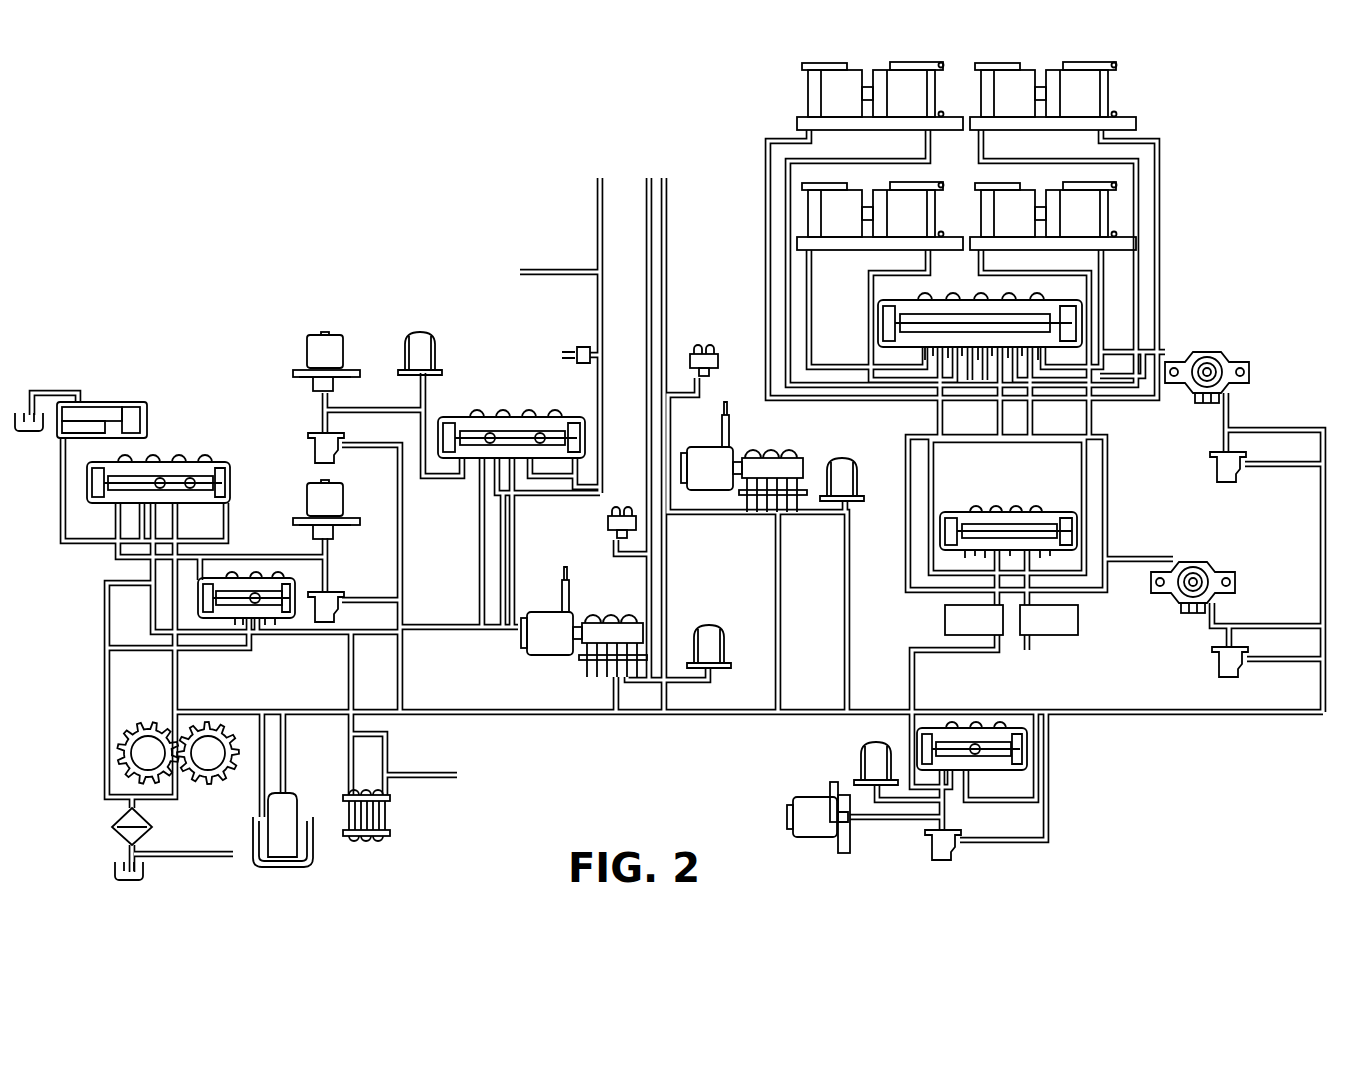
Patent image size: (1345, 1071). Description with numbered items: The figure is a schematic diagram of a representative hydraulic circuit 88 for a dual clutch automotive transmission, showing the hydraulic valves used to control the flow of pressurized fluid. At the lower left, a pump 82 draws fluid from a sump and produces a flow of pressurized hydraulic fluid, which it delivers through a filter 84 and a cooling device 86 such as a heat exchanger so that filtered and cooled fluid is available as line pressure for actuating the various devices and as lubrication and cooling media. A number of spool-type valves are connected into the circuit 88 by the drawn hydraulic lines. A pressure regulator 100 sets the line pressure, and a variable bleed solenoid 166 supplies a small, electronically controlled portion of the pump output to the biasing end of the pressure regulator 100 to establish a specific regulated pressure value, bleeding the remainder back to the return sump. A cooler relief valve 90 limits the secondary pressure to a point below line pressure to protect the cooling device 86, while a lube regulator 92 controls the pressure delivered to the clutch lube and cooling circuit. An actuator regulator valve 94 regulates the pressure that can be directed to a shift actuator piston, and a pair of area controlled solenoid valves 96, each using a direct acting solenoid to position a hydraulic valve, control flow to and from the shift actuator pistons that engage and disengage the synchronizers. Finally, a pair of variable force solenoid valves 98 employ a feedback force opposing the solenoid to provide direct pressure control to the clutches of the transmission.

The pump 82 is at (90, 746).
The filter 84 is at (112, 810).
The cooling device 86 is at (392, 812).
The hydraulic circuit 88 is at (392, 242).
The cooler relief valve 90 is at (248, 583).
The lube regulator 92 is at (510, 417).
The actuator regulator valve 94 is at (978, 728).
The area controlled solenoid valve 96 is at (945, 620).
The variable force solenoid valve 98 is at (767, 467).
The pressure regulator 100 is at (185, 462).
The variable bleed solenoid 166 is at (312, 467).